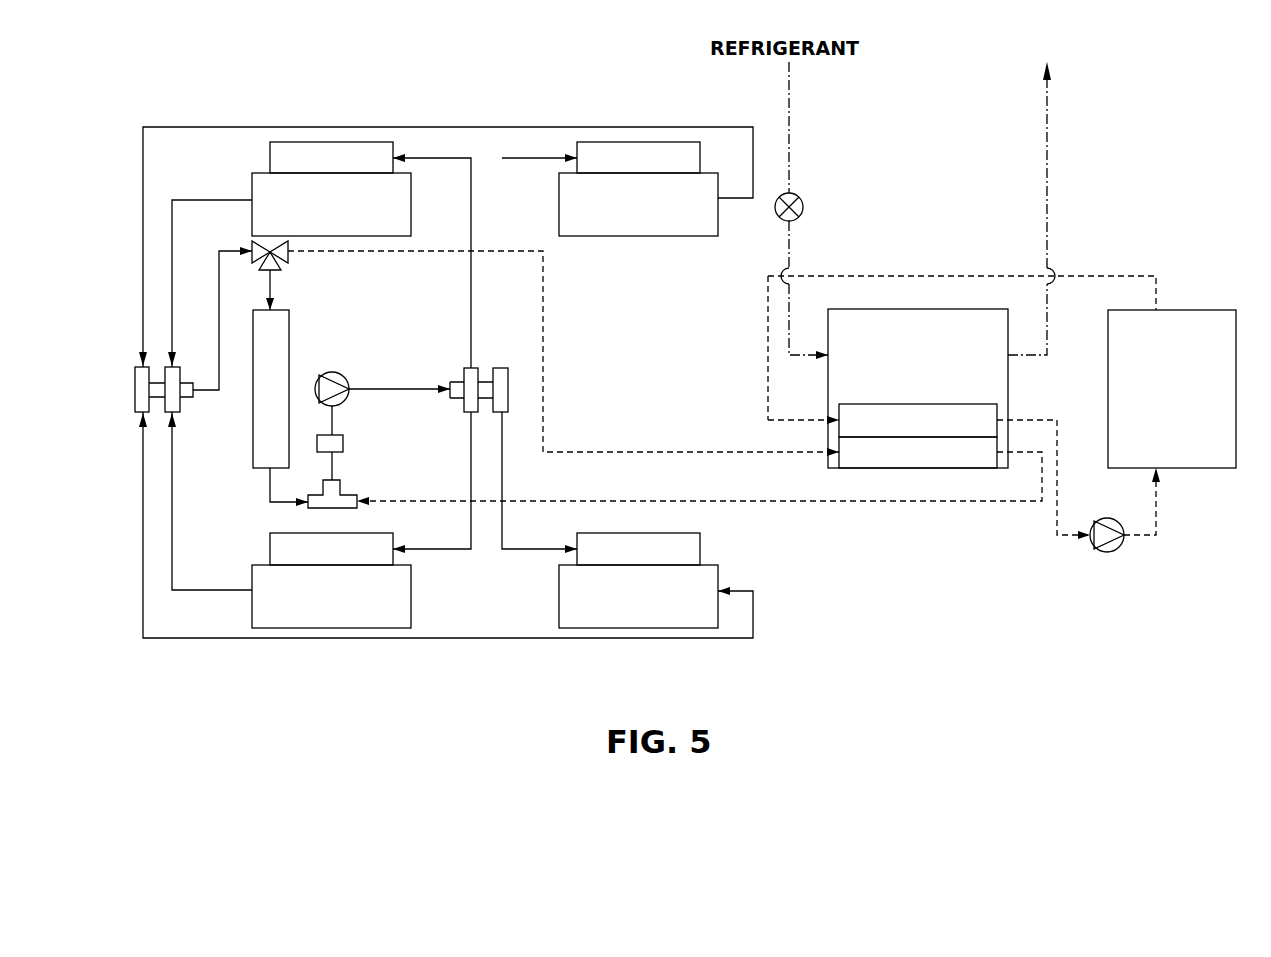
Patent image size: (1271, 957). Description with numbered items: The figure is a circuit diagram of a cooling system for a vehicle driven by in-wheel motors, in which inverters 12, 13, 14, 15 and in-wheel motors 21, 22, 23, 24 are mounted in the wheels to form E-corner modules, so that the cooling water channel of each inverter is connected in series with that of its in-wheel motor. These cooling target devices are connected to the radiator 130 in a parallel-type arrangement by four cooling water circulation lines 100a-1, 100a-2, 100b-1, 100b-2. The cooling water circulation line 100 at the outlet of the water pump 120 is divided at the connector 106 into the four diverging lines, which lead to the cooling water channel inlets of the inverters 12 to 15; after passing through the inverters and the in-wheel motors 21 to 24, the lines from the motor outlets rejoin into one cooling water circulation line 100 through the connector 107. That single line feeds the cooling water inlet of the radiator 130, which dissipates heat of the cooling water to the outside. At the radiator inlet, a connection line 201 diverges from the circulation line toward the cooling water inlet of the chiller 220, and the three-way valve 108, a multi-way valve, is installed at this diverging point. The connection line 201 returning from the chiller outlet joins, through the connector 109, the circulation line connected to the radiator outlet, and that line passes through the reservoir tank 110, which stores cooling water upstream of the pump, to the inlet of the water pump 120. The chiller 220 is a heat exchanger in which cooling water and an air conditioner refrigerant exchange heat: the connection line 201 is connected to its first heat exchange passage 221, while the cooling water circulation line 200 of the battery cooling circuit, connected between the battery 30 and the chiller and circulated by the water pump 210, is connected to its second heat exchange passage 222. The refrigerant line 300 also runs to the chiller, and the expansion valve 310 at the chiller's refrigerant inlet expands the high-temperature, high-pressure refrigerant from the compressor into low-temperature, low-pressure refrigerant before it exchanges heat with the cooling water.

The inverter 12 is at (325, 142).
The inverter 13 is at (270, 545).
The inverter 14 is at (700, 545).
The inverter 15 is at (635, 142).
The in-wheel motor 21 is at (259, 173).
The in-wheel motor 22 is at (340, 628).
The in-wheel motor 23 is at (705, 173).
The in-wheel motor 24 is at (632, 628).
The battery 30 is at (1209, 310).
The cooling water circulation line 100 is at (219, 306).
The cooling water circulation line 100a-1 is at (208, 200).
The cooling water circulation line 100a-2 is at (233, 590).
The cooling water circulation line 100b-1 is at (392, 127).
The cooling water circulation line 100b-2 is at (170, 638).
The connector 106 is at (508, 378).
The connector 107 is at (182, 410).
The 3-way valve 108 is at (254, 243).
The connector 109 is at (345, 486).
The reservoir tank 110 is at (343, 442).
The water pump 120 is at (343, 373).
The radiator 130 is at (289, 320).
The cooling water circulation line 200 is at (1087, 276).
The connection line 201 is at (750, 501).
The water pump 210 is at (1112, 552).
The chiller 220 is at (1008, 385).
The first heat exchange passage 221 is at (978, 450).
The second heat exchange passage 222 is at (855, 422).
The refrigerant line 300 is at (1047, 190).
The expansion valve 310 is at (803, 207).